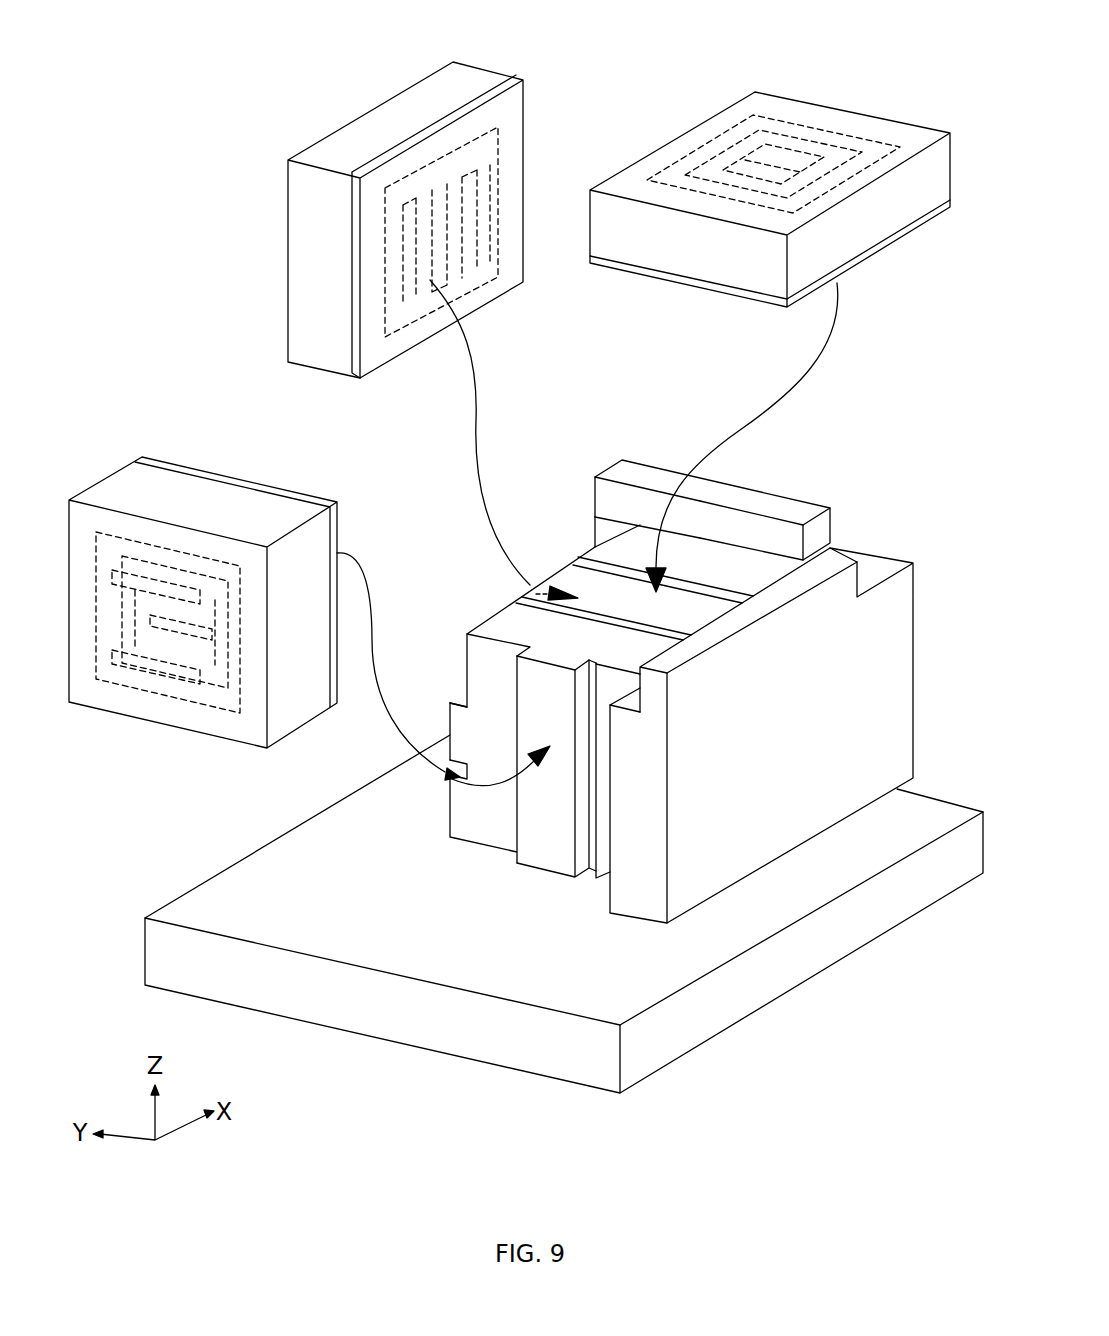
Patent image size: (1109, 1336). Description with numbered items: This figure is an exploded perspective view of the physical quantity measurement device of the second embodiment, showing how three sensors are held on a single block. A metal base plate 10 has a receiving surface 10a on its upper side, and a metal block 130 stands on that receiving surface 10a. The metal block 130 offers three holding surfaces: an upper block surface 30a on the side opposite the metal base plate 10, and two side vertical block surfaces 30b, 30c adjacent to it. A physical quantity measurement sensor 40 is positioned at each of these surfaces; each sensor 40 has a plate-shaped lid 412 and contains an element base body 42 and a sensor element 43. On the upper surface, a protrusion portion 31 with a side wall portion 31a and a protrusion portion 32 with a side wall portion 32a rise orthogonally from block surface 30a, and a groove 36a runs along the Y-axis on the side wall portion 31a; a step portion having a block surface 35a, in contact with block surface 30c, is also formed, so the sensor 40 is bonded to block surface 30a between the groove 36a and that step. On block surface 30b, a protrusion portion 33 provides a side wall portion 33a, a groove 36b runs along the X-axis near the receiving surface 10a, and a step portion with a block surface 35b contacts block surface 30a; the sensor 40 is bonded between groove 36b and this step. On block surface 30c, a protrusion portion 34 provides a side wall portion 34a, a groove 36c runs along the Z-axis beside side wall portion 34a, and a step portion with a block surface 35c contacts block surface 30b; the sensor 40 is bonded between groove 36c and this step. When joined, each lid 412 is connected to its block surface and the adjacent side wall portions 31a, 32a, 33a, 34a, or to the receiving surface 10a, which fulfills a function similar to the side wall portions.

The metal base plate 10 is at (780, 986).
The receiving surface 10a is at (805, 892).
The metal block 130 is at (925, 667).
The block surface 30a is at (623, 593).
The block surface 30b is at (441, 723).
The block surface 30c is at (549, 840).
The protrusion portion 31 is at (798, 488).
The side wall portion 31a is at (778, 538).
The protrusion portion 32 is at (720, 613).
The side wall portion 32a is at (622, 712).
The protrusion portion 33 is at (583, 492).
The side wall portion 33a is at (610, 515).
The protrusion portion 34 is at (629, 900).
The side wall portion 34a is at (637, 689).
The block surface 35a is at (482, 605).
The block surface 35b is at (463, 670).
The block surface 35c is at (486, 832).
The groove 36a is at (572, 552).
The groove 36b is at (435, 768).
The groove 36c is at (584, 892).
The physical quantity measurement sensor 40 is at (418, 52).
The lid 412 is at (518, 78).
The element base body 42 is at (498, 408).
The sensor element 43 is at (457, 190).